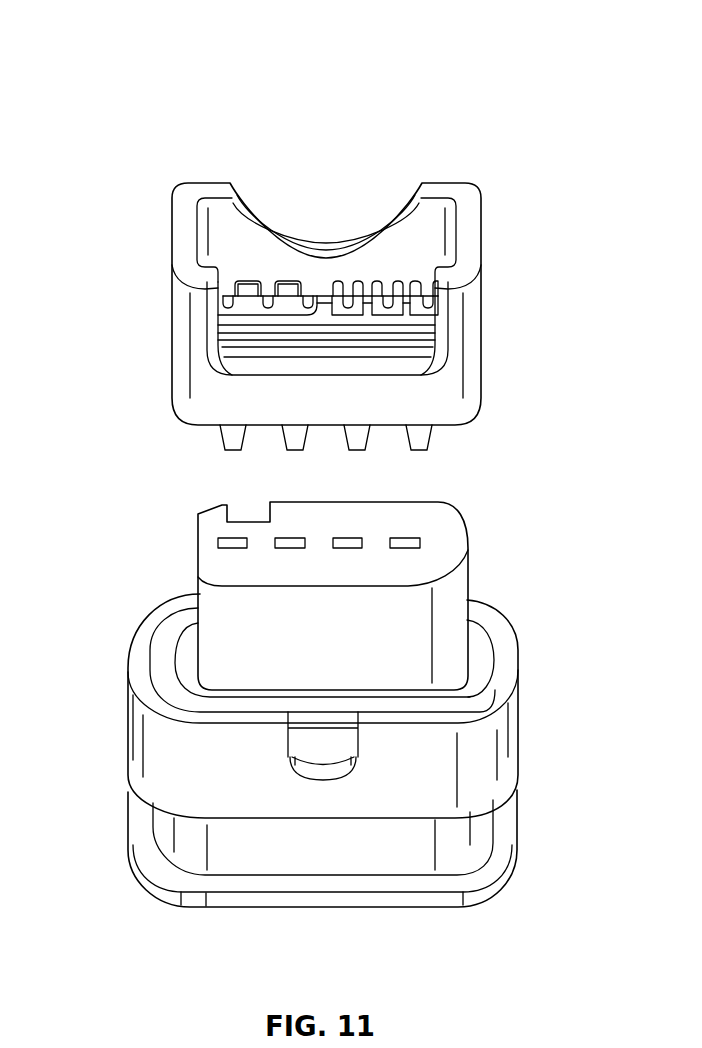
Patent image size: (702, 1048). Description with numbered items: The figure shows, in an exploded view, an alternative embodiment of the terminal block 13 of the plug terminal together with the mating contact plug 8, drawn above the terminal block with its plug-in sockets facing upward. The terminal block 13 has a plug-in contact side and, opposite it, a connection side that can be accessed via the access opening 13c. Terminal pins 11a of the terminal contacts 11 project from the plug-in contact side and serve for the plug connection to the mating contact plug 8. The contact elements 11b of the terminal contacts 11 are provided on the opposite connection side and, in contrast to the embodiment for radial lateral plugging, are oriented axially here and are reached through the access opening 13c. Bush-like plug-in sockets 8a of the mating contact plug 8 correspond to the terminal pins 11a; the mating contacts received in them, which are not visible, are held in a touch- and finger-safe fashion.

The mating contact plug 8 is at (165, 754).
The plug-in sockets 8a is at (230, 543).
The terminal contacts 11 is at (238, 261).
The terminal pins 11a is at (223, 438).
The contact elements 11b is at (245, 284).
The terminal block 13 is at (458, 197).
The access opening 13c is at (387, 362).